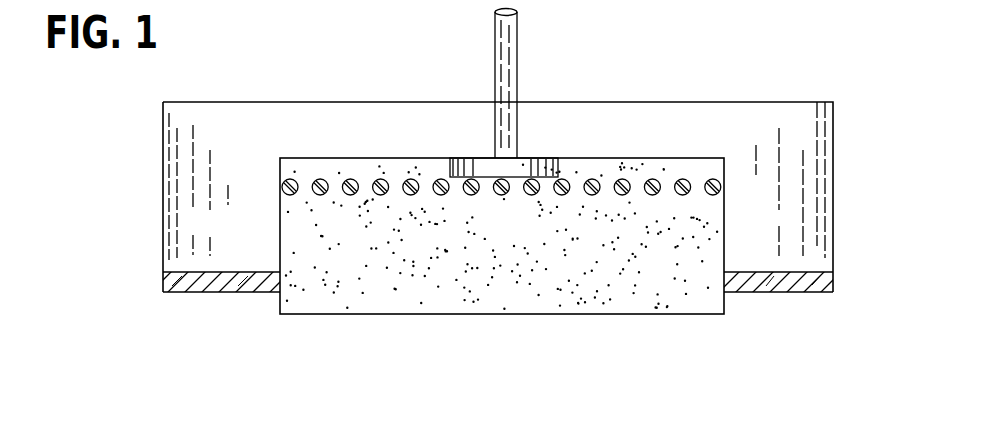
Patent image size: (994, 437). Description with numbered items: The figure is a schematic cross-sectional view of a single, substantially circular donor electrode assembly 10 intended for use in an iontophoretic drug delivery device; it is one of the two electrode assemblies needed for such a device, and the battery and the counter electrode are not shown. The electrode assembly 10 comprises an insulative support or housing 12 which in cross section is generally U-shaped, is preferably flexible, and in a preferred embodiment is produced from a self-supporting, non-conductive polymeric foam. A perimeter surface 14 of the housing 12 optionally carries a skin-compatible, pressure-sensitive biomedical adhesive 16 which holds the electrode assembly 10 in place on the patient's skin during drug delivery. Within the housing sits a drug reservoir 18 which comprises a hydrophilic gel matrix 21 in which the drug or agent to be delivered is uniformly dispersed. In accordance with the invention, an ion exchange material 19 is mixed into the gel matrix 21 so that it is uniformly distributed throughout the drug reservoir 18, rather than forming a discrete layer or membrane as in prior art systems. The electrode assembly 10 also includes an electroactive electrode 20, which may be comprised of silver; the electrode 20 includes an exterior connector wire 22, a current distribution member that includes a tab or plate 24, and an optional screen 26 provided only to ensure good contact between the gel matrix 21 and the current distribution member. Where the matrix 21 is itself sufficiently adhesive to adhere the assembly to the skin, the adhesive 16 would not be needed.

The donor electrode assembly 10 is at (790, 83).
The insulative support or housing 12 is at (218, 220).
The perimeter surface 14 is at (188, 276).
The biomedical adhesive 16 is at (247, 278).
The drug reservoir 18 is at (514, 237).
The ion exchange material 19 is at (357, 290).
The electroactive electrode 20 is at (521, 44).
The gel matrix 21 is at (543, 280).
The exterior connector wire 22 is at (505, 63).
The tab or plate 24 is at (542, 158).
The screen 26 is at (383, 178).